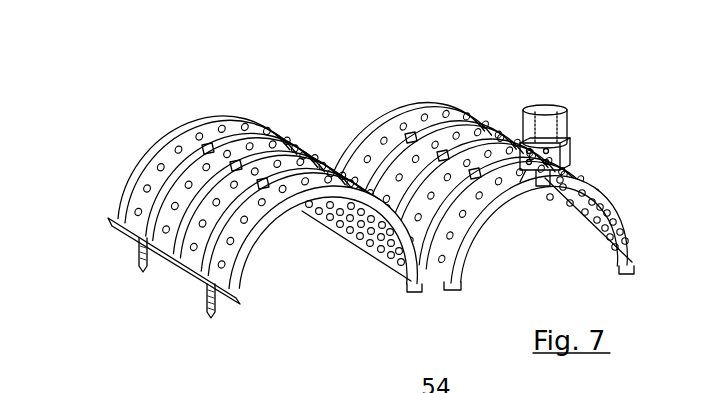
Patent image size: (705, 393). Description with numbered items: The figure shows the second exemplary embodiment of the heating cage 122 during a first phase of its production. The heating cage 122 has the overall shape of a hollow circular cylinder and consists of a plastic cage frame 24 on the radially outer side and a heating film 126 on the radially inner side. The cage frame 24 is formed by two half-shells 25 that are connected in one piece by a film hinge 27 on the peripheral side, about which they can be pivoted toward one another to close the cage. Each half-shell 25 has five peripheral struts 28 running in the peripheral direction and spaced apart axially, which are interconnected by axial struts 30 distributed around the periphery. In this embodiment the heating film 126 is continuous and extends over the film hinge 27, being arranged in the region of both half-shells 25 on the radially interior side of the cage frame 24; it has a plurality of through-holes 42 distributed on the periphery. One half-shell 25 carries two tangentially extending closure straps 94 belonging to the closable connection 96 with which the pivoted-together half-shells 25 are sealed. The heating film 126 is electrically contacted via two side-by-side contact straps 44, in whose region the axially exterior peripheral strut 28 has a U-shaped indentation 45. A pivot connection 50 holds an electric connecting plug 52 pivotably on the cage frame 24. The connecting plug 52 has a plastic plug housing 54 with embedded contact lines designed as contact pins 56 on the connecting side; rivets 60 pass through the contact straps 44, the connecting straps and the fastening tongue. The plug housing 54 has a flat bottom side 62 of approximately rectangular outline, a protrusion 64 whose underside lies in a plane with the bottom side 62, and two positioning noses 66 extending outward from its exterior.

The heating cage 122 is at (147, 87).
The cage frame 24 is at (214, 124).
The half-shells 25 is at (237, 118).
The peripheral struts 28 is at (137, 180).
The axial struts 30 is at (187, 147).
The through-holes 42 is at (137, 218).
The closure straps 94 is at (138, 262).
The closable connection 96 is at (214, 324).
The heating film 126 is at (358, 234).
The film hinge 27 is at (423, 260).
The positioning noses 66 is at (472, 126).
The pivot connection 50 is at (532, 172).
The connecting plug 52 is at (553, 103).
The plug housing 54 is at (547, 118).
The contact pins 56 is at (531, 108).
The rivets 60 is at (547, 168).
The bottom side 62 is at (550, 149).
The protrusion 64 is at (566, 140).
The contact straps 44 is at (549, 190).
The indentation 45 is at (597, 236).